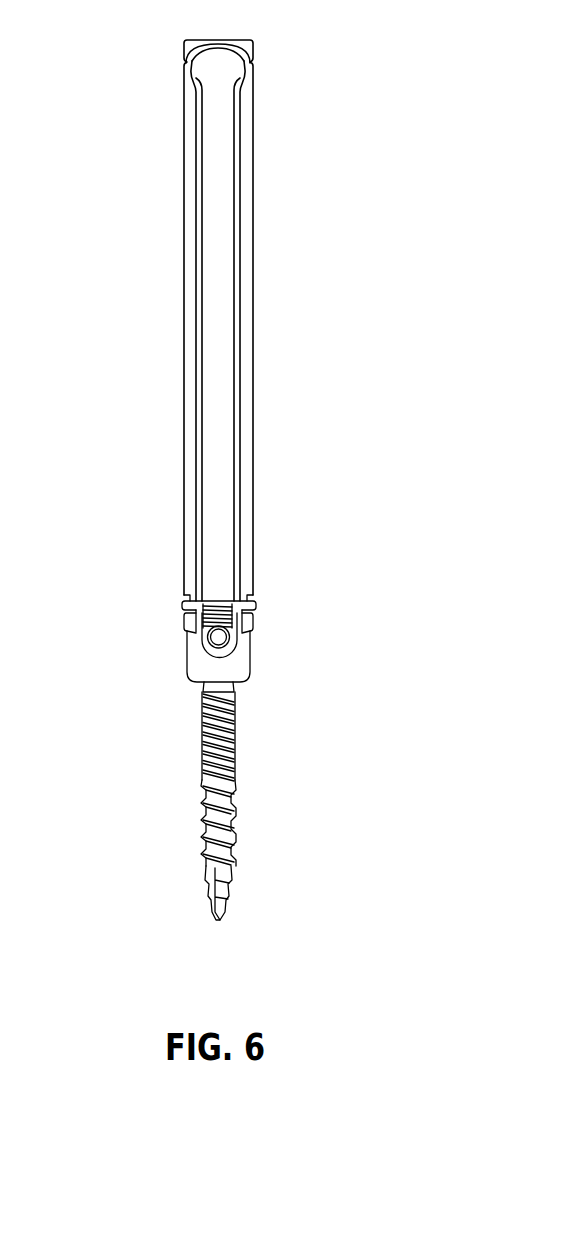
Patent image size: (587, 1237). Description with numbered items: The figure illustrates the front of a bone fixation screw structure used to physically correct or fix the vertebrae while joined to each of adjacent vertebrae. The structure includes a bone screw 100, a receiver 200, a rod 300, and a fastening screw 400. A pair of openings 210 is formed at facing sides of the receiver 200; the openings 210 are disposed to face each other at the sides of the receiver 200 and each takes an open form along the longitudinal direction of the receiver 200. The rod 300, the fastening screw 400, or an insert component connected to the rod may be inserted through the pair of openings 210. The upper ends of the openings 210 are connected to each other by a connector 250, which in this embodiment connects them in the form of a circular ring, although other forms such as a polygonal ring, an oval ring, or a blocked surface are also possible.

The bone screw 100 is at (222, 805).
The receiver 200 is at (166, 375).
The openings 210 is at (226, 320).
The connector 250 is at (238, 44).
The rod 300 is at (213, 640).
The fastening screw 400 is at (233, 612).